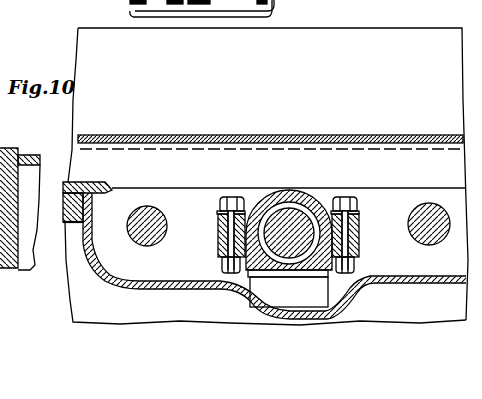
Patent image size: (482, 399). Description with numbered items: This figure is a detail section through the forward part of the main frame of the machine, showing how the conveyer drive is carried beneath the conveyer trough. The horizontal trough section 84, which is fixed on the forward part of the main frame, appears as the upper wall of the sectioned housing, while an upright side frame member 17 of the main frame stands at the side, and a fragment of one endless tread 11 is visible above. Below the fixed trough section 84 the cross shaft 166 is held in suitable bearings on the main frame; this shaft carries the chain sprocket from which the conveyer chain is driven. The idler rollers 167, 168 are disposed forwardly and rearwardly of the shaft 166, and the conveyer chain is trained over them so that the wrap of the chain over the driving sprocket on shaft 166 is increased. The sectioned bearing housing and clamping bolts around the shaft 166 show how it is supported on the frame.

The endless tread 11 is at (133, 11).
The upright side frame member 17 is at (20, 190).
The horizontal trough section 84 is at (365, 40).
The cross shaft 166 is at (297, 217).
The idler roller 167 is at (146, 215).
The idler roller 168 is at (426, 208).